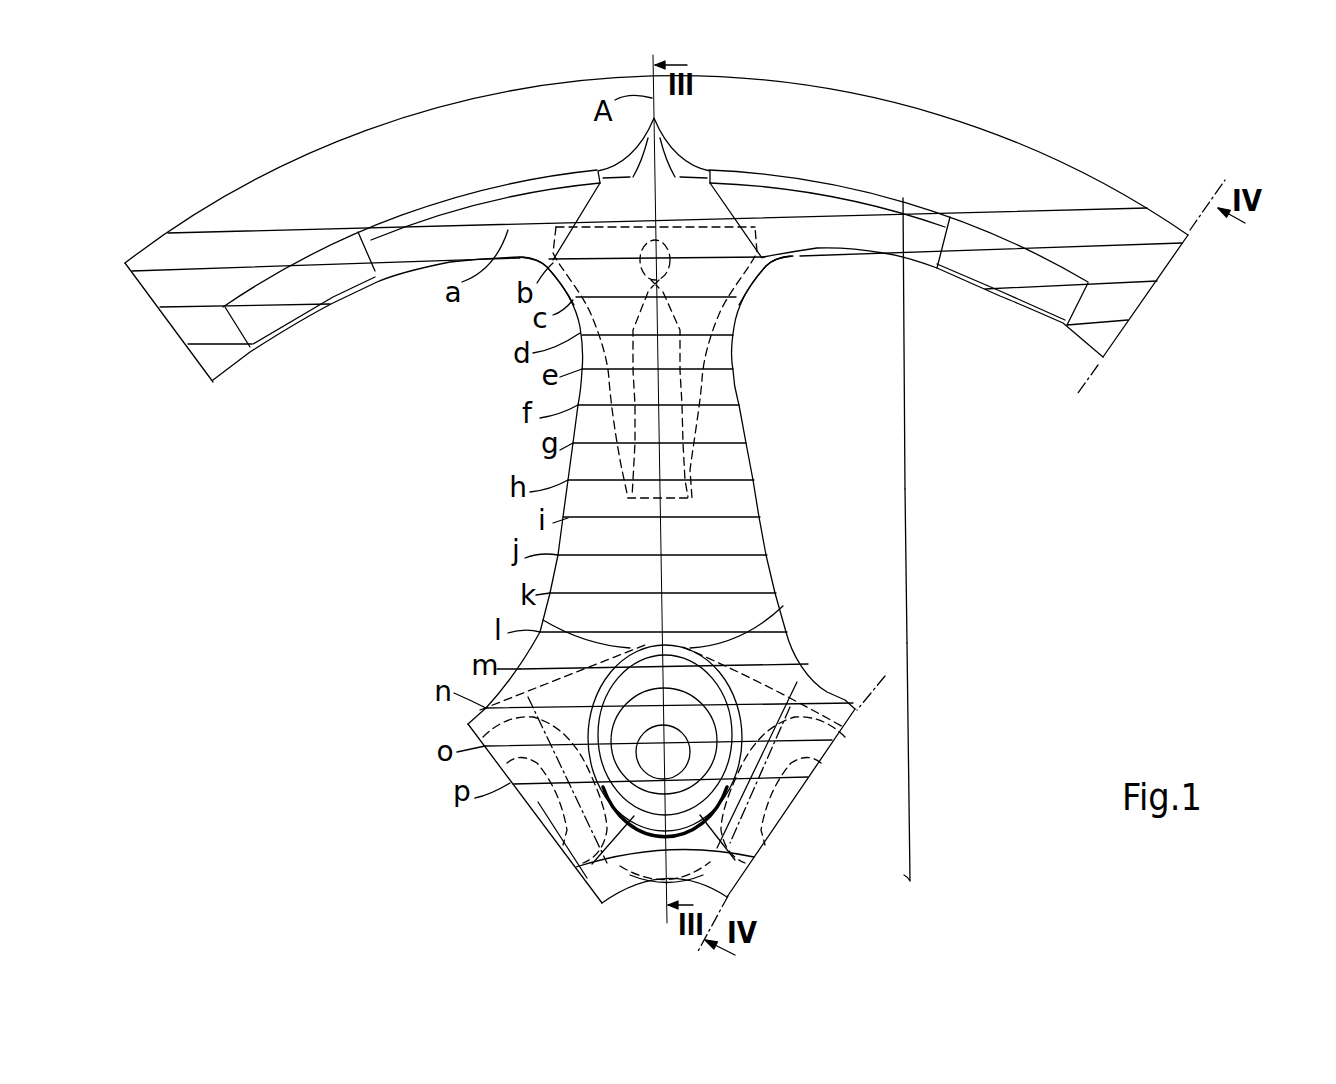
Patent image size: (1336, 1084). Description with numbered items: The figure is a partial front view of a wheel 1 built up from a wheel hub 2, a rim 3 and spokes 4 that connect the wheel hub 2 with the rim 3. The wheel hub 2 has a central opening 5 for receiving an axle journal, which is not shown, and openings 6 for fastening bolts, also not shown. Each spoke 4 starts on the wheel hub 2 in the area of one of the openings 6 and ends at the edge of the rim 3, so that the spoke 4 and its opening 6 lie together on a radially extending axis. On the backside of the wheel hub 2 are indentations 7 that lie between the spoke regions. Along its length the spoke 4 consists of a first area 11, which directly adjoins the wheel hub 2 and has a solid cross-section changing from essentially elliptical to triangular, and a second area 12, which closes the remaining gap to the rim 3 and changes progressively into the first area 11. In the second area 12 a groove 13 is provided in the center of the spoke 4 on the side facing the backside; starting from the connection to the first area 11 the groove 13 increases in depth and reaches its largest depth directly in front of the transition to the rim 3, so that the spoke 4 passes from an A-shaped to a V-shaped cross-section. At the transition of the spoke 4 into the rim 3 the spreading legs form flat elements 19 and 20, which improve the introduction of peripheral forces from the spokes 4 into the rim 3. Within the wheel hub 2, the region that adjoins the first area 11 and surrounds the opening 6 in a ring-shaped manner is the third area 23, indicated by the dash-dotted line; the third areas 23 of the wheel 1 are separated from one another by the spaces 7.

The wheel 1 is at (1240, 145).
The wheel hub 2 is at (857, 727).
The rim 3 is at (1167, 263).
The spoke 4 is at (756, 497).
The central opening 5 is at (640, 950).
The opening 6 is at (663, 753).
The indentation 7 is at (538, 802).
The first area 11 is at (905, 480).
The second area 12 is at (904, 345).
The groove 13 is at (672, 427).
The flat element 19 is at (521, 262).
The flat element 20 is at (760, 273).
The third area 23 is at (907, 634).